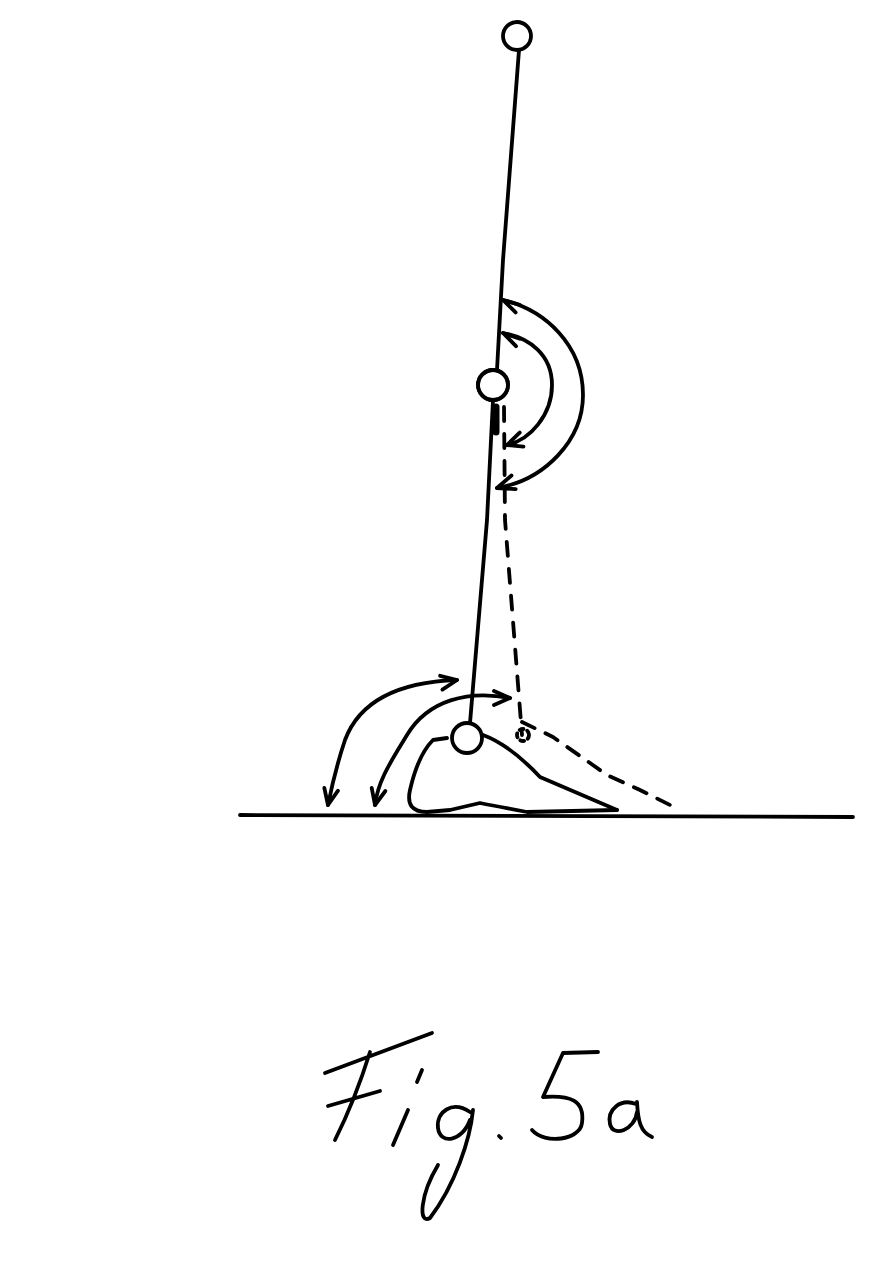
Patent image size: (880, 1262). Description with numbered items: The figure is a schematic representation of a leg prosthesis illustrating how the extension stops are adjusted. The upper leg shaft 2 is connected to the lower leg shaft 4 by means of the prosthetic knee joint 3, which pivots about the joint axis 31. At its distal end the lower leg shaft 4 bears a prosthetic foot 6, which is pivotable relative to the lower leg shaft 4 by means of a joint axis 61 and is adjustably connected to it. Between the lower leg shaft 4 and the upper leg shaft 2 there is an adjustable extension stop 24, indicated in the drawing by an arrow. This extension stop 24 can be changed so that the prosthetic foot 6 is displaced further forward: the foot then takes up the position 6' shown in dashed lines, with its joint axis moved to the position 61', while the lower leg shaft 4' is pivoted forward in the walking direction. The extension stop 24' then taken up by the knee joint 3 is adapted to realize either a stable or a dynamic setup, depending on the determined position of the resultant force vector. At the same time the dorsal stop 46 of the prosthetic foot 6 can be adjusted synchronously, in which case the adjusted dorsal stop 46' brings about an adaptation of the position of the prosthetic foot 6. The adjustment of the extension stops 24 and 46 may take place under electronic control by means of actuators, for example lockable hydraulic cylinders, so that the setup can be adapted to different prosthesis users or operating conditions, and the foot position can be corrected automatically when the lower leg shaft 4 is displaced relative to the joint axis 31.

The upper leg shaft 2 is at (512, 182).
The prosthetic knee joint 3 is at (447, 427).
The joint axis 31 is at (478, 387).
The lower leg shaft 4 is at (405, 561).
The lower leg shaft pivoted forward 4' is at (610, 565).
The extension stop 24 is at (630, 376).
The extension stop 24' is at (626, 313).
The dorsal stop 46 is at (332, 722).
The dorsal stop 46' is at (281, 748).
The prosthetic foot 6 is at (519, 829).
The prosthetic foot position 6' is at (653, 751).
The joint axis 61 is at (555, 640).
The joint axis 61' is at (636, 664).